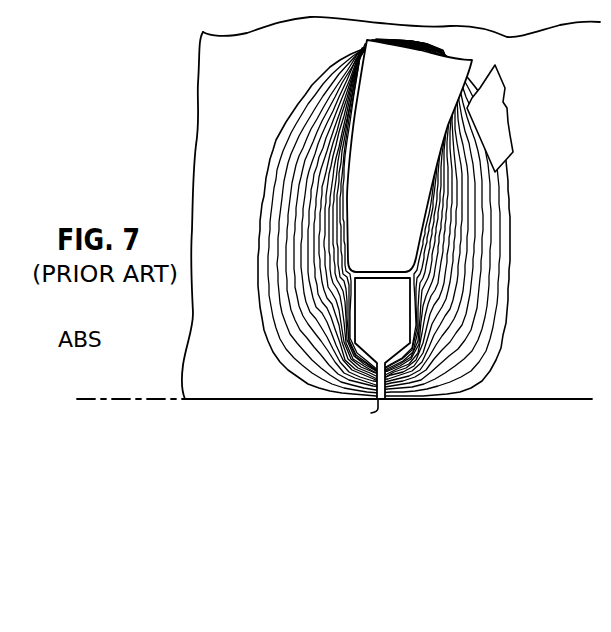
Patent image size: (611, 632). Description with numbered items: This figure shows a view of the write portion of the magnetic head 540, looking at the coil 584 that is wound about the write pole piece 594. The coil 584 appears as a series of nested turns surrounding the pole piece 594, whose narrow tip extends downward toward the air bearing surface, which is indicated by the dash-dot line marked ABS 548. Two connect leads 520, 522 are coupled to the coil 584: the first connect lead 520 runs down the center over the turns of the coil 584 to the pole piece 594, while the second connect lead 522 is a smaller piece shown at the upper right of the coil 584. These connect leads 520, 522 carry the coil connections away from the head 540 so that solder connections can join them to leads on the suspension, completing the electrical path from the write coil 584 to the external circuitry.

The connect lead 520 is at (412, 156).
The connect lead 522 is at (507, 106).
The magnetic head 540 is at (522, 211).
The air bearing surface 548 is at (128, 398).
The coil layer 584 is at (483, 300).
The second pole piece layer 594 is at (398, 330).